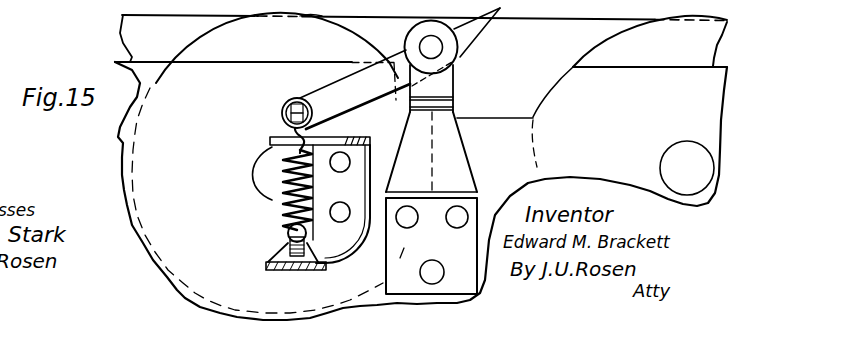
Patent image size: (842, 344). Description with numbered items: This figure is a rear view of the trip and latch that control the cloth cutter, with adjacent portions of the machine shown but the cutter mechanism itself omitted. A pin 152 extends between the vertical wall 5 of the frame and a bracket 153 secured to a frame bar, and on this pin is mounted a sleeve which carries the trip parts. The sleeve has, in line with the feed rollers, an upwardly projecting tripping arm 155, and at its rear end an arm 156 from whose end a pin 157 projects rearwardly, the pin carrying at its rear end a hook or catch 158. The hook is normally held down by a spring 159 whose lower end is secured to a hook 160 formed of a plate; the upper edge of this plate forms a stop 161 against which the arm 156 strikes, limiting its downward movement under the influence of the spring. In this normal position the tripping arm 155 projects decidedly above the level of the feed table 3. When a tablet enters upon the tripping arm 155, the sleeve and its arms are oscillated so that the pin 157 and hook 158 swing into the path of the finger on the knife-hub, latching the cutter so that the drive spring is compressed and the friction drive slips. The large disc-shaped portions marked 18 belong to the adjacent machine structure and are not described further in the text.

The feed table 3 is at (136, 9).
The vertical wall 5 is at (132, 36).
The disc 18 is at (193, 37).
The pin 152 is at (443, 52).
The bracket 153 is at (455, 87).
The tripping arm 155 is at (500, 8).
The arm 156 is at (353, 55).
The pin 157 is at (283, 126).
The hook or catch 158 is at (283, 107).
The spring 159 is at (285, 204).
The hook 160 is at (280, 244).
The stop 161 is at (273, 137).